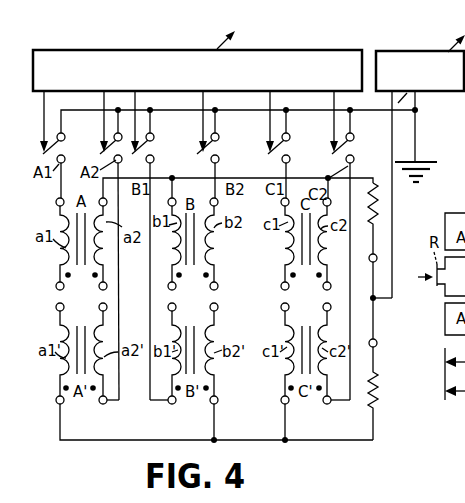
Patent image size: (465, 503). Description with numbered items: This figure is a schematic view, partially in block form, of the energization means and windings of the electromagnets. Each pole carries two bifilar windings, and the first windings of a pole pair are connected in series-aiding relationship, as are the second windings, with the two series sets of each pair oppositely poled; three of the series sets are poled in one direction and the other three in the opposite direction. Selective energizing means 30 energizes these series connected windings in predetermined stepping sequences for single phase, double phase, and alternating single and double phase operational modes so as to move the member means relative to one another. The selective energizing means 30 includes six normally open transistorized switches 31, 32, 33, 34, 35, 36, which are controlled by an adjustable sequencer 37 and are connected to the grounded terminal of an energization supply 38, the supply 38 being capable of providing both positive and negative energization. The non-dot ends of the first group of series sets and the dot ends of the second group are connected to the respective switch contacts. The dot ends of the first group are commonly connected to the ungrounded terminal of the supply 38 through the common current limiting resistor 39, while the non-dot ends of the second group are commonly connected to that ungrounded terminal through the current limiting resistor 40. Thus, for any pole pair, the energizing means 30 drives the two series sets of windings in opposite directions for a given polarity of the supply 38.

The selective energizing means 30 is at (277, 30).
The normally open transistorized switch 31 is at (48, 148).
The normally open transistorized switch 32 is at (106, 148).
The normally open transistorized switch 33 is at (142, 141).
The normally open transistorized switch 34 is at (198, 151).
The normally open transistorized switch 35 is at (266, 151).
The normally open transistorized switch 36 is at (331, 151).
The adjustable sequencer 37 is at (334, 51).
The energization supply 38 is at (413, 51).
The common current limiting resistor 39 is at (371, 407).
The current limiting resistor 40 is at (375, 194).